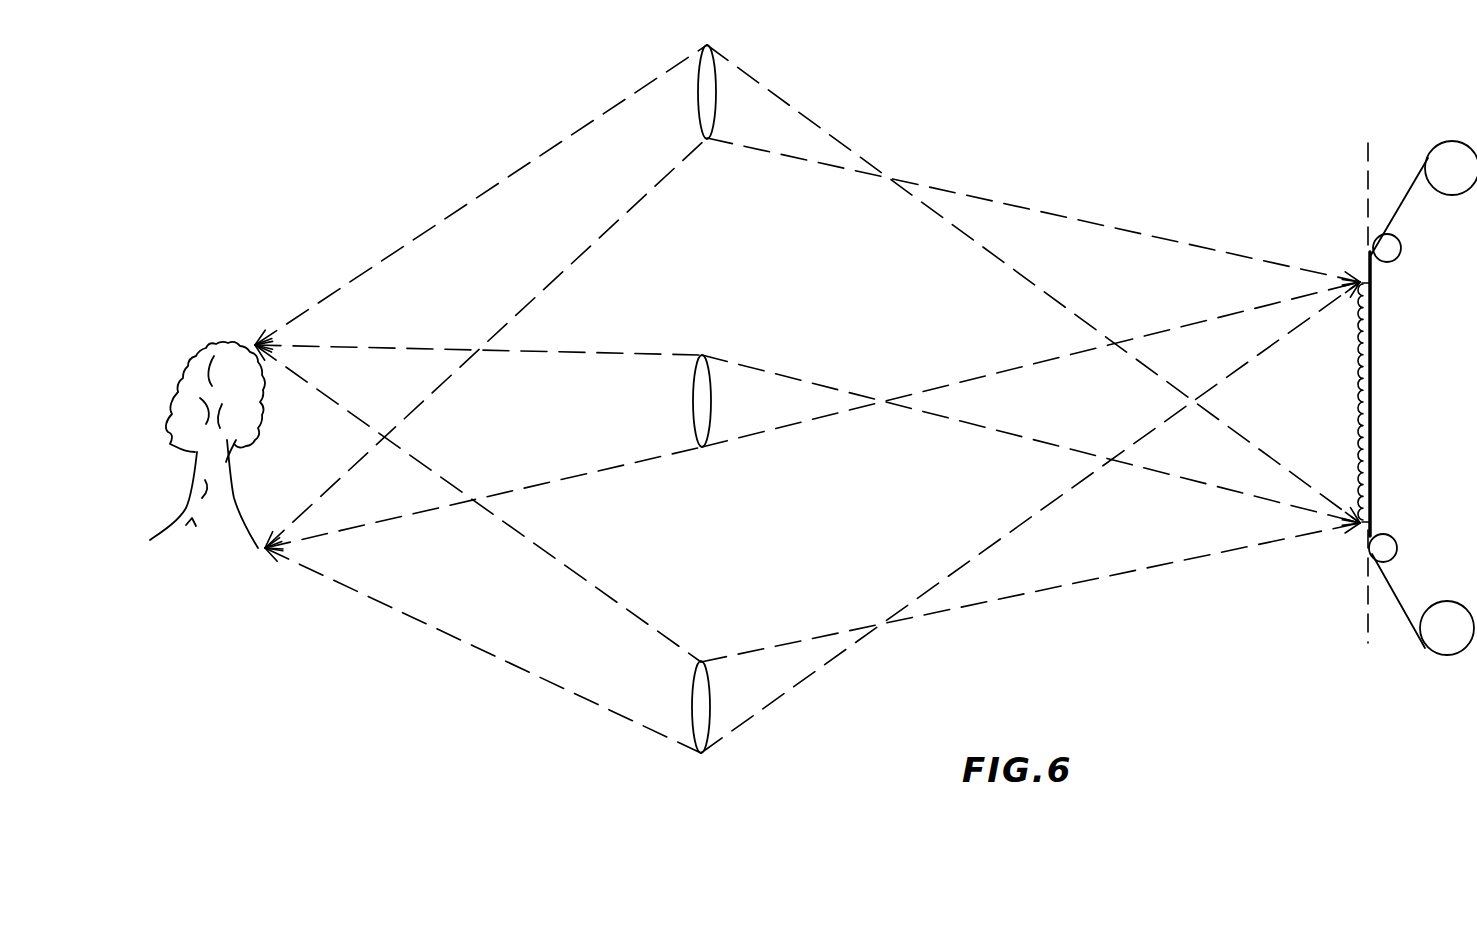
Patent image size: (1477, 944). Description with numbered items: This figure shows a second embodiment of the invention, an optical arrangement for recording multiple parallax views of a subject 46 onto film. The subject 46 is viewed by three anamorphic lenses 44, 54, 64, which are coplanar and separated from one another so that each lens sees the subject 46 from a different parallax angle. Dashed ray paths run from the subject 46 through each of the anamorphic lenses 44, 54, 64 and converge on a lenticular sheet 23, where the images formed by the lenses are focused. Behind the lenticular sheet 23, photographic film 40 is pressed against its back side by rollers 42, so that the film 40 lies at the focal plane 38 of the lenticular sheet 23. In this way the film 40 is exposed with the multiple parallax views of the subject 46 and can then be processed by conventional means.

The lenticular sheet 23 is at (1363, 276).
The focal plane 38 is at (1368, 174).
The photographic film 40 is at (1410, 628).
The rollers 42 is at (1401, 253).
The anamorphic lens 44 is at (698, 78).
The subject 46 is at (186, 374).
The anamorphic lens 54 is at (696, 388).
The anamorphic lens 64 is at (699, 754).